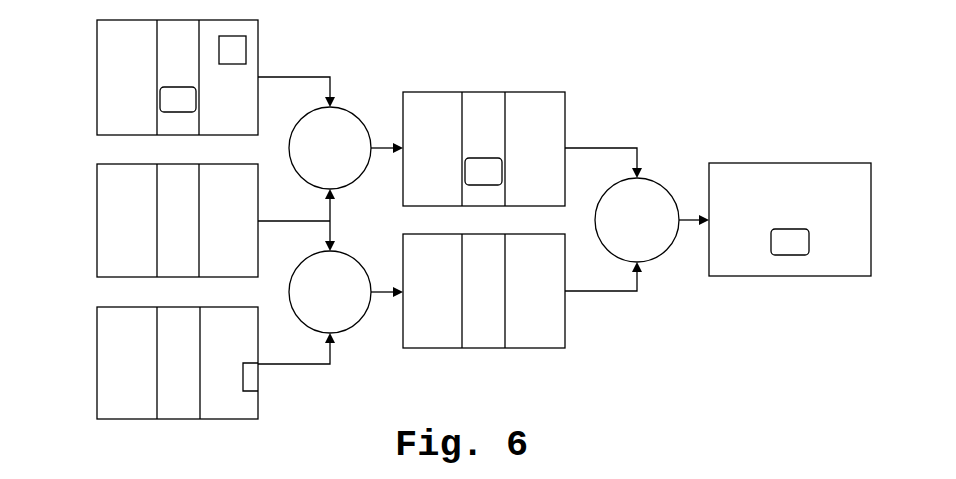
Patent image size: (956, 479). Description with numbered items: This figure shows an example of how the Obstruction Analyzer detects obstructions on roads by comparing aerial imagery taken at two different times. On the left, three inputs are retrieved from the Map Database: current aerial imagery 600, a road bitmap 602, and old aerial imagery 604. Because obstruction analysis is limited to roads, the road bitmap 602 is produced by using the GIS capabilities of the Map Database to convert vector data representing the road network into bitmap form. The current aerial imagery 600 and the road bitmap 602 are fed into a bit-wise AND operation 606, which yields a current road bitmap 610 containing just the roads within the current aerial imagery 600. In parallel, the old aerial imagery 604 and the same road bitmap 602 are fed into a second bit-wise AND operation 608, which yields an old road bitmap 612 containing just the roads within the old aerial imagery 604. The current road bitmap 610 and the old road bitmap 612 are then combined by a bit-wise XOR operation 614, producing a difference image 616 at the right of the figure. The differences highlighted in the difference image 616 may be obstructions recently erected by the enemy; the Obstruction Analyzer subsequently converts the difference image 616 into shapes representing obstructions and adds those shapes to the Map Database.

The current aerial imagery 600 is at (97, 79).
The road bitmap 602 is at (97, 221).
The old aerial imagery 604 is at (97, 364).
The bit-wise AND operation 606 is at (360, 117).
The bit-wise AND operation 608 is at (360, 323).
The current road bitmap 610 is at (483, 92).
The old road bitmap 612 is at (484, 348).
The bit-wise XOR operation 614 is at (667, 190).
The difference image 616 is at (790, 163).